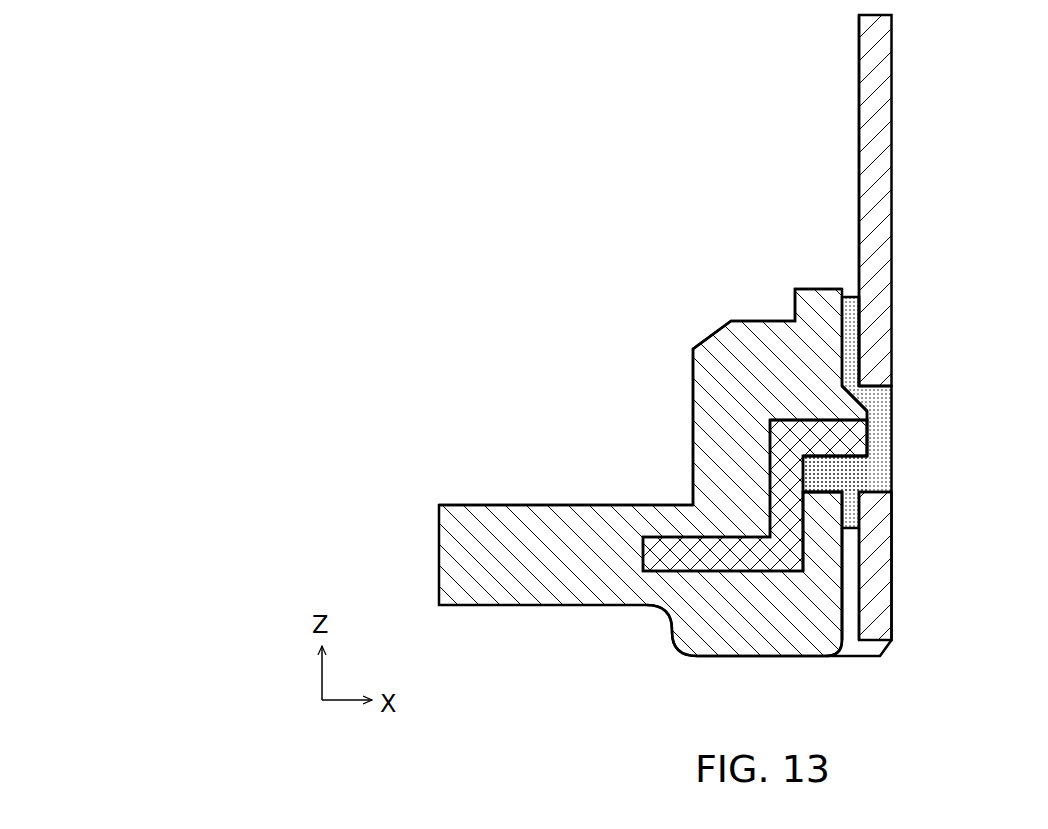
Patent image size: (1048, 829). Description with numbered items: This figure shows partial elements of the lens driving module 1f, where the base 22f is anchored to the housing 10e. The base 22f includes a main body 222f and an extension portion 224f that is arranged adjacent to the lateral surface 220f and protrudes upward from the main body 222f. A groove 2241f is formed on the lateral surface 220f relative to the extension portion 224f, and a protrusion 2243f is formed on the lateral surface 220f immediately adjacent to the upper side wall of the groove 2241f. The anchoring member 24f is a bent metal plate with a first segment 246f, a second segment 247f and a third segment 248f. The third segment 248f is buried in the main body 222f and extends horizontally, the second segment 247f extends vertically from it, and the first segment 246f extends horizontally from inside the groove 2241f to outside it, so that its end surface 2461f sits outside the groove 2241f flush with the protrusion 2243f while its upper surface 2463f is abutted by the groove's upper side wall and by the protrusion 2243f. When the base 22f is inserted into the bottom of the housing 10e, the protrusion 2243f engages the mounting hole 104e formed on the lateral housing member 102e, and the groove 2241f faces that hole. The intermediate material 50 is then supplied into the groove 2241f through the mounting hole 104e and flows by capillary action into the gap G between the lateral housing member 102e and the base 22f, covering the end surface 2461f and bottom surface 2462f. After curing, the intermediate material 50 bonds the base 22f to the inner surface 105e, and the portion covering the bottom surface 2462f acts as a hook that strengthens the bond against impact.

The lens driving module 1f is at (530, 166).
The housing 10e is at (931, 200).
The inner surface 105e is at (846, 181).
The lateral housing member 102e is at (876, 243).
The mounting hole 104e is at (881, 381).
The intermediate material 50 is at (880, 417).
The upper surface 2463f is at (869, 393).
The first segment 246f is at (872, 433).
The end surface 2461f is at (870, 448).
The bottom surface 2462f is at (838, 460).
The groove 2241f is at (818, 470).
The second segment 247f is at (812, 537).
The lateral surface 220f is at (852, 607).
The extension portion 224f is at (730, 365).
The protrusion 2243f is at (855, 399).
The third segment 248f is at (690, 502).
The anchoring member 24f is at (647, 556).
The base 22f is at (699, 665).
The main body 222f is at (768, 632).
The gap G is at (849, 644).